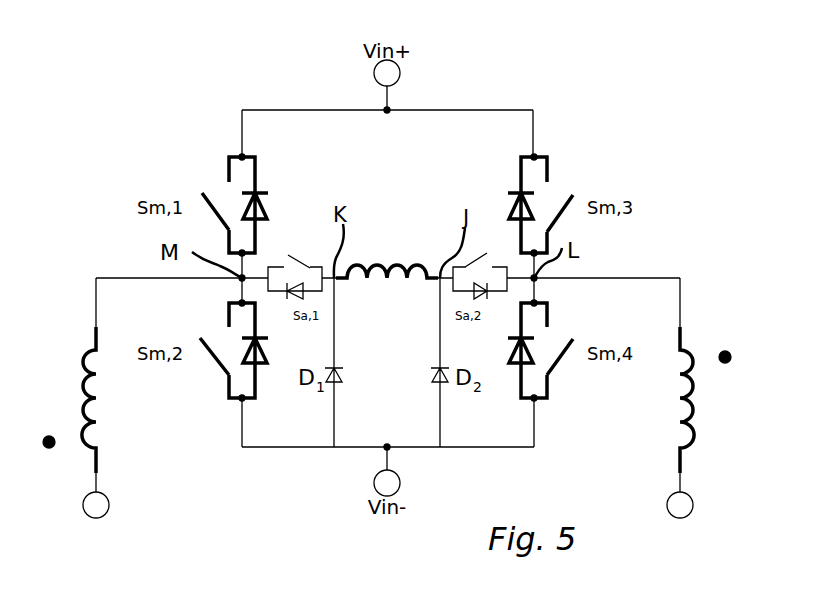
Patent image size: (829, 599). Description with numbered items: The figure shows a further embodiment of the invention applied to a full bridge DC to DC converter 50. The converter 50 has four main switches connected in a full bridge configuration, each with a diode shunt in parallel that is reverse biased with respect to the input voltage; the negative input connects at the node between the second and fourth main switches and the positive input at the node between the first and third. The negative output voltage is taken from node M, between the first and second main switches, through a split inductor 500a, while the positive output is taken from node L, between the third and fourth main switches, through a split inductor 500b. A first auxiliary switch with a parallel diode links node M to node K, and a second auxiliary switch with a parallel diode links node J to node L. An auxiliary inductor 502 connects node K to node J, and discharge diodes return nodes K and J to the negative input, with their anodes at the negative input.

The full bridge DC to DC converter 50 is at (298, 489).
The split inductor 500a is at (72, 358).
The split inductor 500b is at (698, 412).
The auxiliary inductor 502 is at (385, 258).